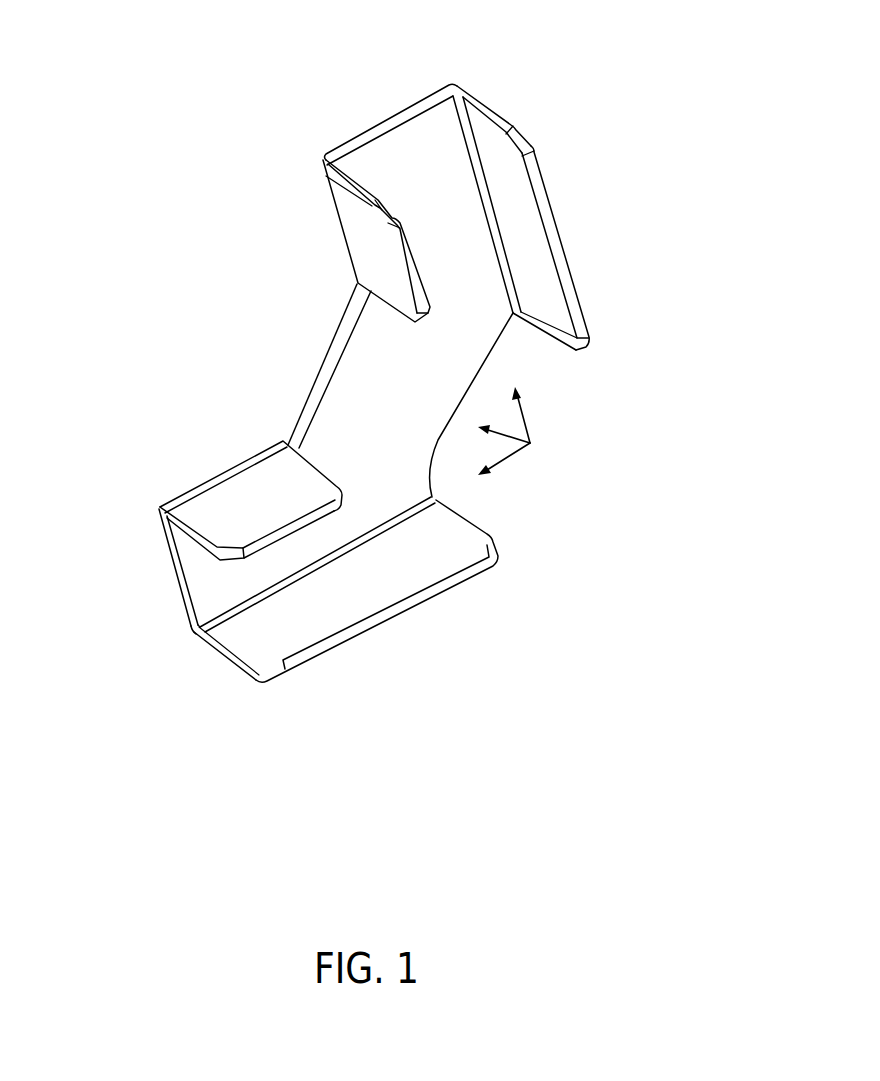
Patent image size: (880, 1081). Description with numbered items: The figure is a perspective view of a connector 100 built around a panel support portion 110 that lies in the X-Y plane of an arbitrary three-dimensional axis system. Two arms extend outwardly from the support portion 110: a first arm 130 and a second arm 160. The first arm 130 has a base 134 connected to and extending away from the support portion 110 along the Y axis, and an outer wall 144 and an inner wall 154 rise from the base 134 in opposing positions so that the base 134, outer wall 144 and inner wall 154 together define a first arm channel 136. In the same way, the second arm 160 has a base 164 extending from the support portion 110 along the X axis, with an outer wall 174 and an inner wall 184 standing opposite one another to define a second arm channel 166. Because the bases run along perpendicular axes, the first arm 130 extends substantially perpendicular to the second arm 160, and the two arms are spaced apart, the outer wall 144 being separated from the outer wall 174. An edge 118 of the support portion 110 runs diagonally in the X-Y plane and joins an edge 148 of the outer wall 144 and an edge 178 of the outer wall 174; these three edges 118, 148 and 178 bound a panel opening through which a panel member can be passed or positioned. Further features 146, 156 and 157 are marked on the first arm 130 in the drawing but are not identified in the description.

The connector 100 is at (137, 715).
The panel support portion 110 is at (430, 362).
The edge 118 is at (437, 443).
The first arm 130 is at (630, 313).
The base 134 is at (352, 142).
The first arm channel 136 is at (428, 167).
The outer wall 144 is at (503, 133).
The inner arm 146 is at (485, 138).
The edge 148 is at (565, 352).
The inner wall 154 is at (360, 253).
The tab fold 156 is at (323, 177).
The tab bend line 157 is at (343, 208).
The second arm 160 is at (297, 720).
The base 164 is at (173, 552).
The second arm channel 166 is at (188, 595).
The outer wall 174 is at (270, 658).
The edge 178 is at (490, 537).
The inner wall 184 is at (235, 488).